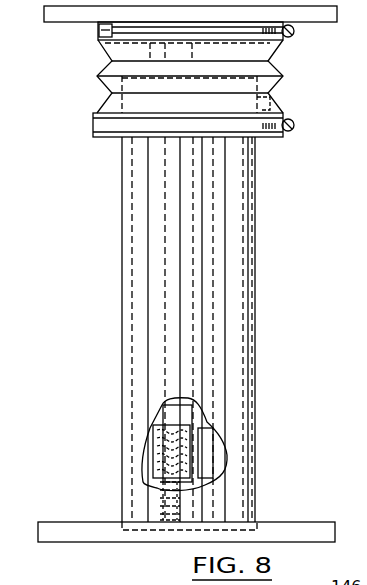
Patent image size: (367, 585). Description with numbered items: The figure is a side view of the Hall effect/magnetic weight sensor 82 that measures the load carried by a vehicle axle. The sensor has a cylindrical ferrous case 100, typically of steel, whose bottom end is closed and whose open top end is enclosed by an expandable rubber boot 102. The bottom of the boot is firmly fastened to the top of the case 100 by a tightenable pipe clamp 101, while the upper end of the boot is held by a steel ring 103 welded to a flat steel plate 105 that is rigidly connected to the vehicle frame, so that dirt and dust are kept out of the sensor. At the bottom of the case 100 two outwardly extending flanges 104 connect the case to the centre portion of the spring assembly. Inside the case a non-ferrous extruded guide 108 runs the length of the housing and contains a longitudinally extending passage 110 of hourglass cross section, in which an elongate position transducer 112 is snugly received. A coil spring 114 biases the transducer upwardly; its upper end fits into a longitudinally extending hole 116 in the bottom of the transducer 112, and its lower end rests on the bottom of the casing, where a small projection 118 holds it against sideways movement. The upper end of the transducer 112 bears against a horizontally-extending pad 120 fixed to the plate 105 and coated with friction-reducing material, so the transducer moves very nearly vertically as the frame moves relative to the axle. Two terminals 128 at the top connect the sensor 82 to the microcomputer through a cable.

The weight sensor 82 is at (262, 302).
The cylindrical ferrous case 100 is at (252, 243).
The pipe clamp 101 is at (250, 140).
The expandable boot 102 is at (98, 71).
The steel ring 103 is at (99, 34).
The outwardly extending flanges 104 is at (70, 530).
The flat steel plate 105 is at (310, 13).
The non-ferrous extruded guide 108 is at (228, 362).
The longitudinally extending passage 110 is at (205, 388).
The elongate position transducer 112 is at (178, 412).
The coil spring 114 is at (150, 498).
The longitudinally extending hole 116 is at (153, 451).
The small projection 118 is at (167, 527).
The horizontally-extending pad 120 is at (238, 30).
The terminals 128 is at (272, 103).